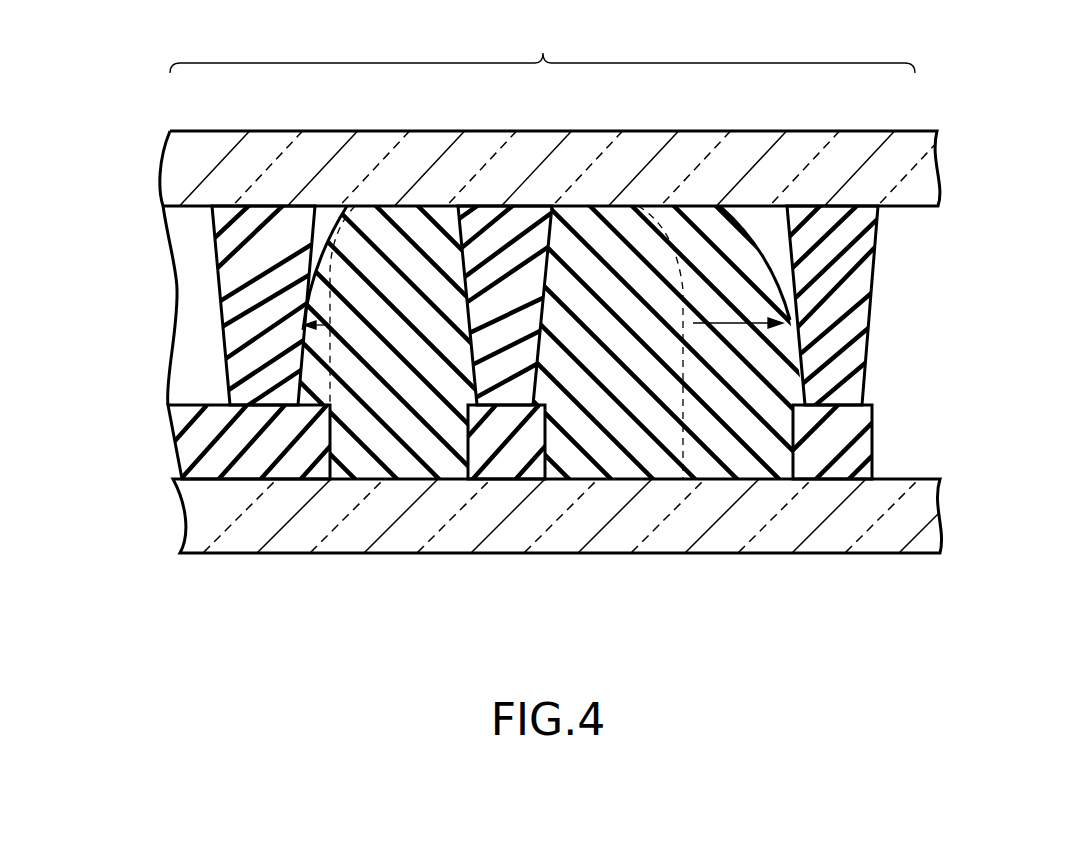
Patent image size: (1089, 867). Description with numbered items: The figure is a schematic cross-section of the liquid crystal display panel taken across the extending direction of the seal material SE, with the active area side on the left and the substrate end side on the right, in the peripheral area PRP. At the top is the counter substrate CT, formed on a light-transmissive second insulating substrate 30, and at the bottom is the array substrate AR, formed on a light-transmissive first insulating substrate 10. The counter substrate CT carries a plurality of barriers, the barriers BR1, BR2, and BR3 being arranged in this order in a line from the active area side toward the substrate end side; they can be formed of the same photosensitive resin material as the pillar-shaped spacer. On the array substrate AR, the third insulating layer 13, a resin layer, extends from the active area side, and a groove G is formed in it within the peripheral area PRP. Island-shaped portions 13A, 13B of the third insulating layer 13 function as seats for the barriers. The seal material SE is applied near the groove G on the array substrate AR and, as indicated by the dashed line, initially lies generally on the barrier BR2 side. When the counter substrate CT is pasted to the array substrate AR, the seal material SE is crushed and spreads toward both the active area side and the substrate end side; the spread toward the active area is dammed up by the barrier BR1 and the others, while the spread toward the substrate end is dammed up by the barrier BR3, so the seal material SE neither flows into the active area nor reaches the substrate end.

The peripheral area PRP is at (542, 48).
The counter substrate CT is at (952, 165).
The second insulating substrate 30 is at (160, 177).
The array substrate AR is at (952, 510).
The first insulating substrate 10 is at (186, 523).
The third insulating layer 13 is at (172, 443).
The island-shaped portion of the third insulating layer 13A is at (505, 465).
The island-shaped portion of the third insulating layer 13B is at (844, 460).
The barrier BR1 is at (270, 233).
The barrier BR2 is at (502, 233).
The barrier BR3 is at (827, 233).
The groove G is at (467, 404).
The seal material SE is at (718, 217).